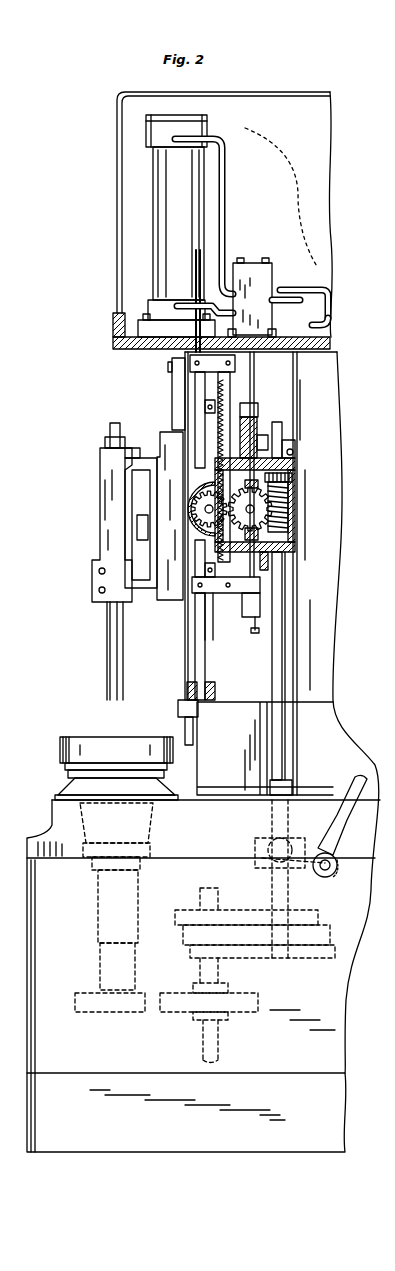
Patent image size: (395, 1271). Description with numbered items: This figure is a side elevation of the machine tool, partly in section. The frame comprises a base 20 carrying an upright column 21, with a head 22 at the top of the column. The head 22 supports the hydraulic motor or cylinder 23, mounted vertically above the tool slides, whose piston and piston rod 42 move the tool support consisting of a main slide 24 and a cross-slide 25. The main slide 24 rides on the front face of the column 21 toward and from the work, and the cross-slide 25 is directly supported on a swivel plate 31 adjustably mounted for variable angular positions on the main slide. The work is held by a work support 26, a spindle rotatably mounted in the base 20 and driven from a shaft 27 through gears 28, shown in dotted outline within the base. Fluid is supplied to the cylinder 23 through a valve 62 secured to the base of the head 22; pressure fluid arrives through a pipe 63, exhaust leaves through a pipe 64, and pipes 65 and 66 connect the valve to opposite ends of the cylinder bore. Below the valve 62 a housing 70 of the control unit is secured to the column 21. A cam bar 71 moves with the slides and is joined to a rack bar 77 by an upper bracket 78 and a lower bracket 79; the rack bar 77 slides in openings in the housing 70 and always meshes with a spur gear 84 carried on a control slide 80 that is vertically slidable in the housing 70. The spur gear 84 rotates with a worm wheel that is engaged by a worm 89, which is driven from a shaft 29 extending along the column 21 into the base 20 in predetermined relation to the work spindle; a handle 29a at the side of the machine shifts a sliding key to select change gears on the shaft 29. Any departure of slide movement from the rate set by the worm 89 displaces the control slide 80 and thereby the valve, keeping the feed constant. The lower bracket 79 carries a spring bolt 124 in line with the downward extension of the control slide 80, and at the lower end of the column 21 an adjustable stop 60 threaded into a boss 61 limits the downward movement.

The base 20 is at (345, 1040).
The column 21 is at (335, 658).
The head 22 is at (113, 342).
The cylinder 23 is at (176, 233).
The main slide 24 is at (170, 605).
The cross-slide 25 is at (137, 457).
The work support 26 is at (68, 752).
The shaft 27 is at (212, 1036).
The gears 28 is at (175, 1012).
The shaft 29 is at (276, 820).
The handle 29a is at (348, 778).
The swivel plate 31 is at (153, 598).
The piston rod 42 is at (172, 396).
The adjustable stop 60 is at (185, 726).
The boss 61 is at (178, 707).
The valve 62 is at (253, 278).
The pipe 63 is at (332, 325).
The pipe 64 is at (331, 300).
The pipe 65 is at (188, 301).
The pipe 66 is at (224, 213).
The housing 70 is at (297, 468).
The cam bar 71 is at (197, 660).
The rack bar 77 is at (227, 393).
The bracket 78 is at (236, 363).
The bracket 79 is at (222, 595).
The control slide 80 is at (254, 419).
The spur gear 84 is at (258, 520).
The worm 89 is at (290, 500).
The spring bolt 124 is at (255, 634).